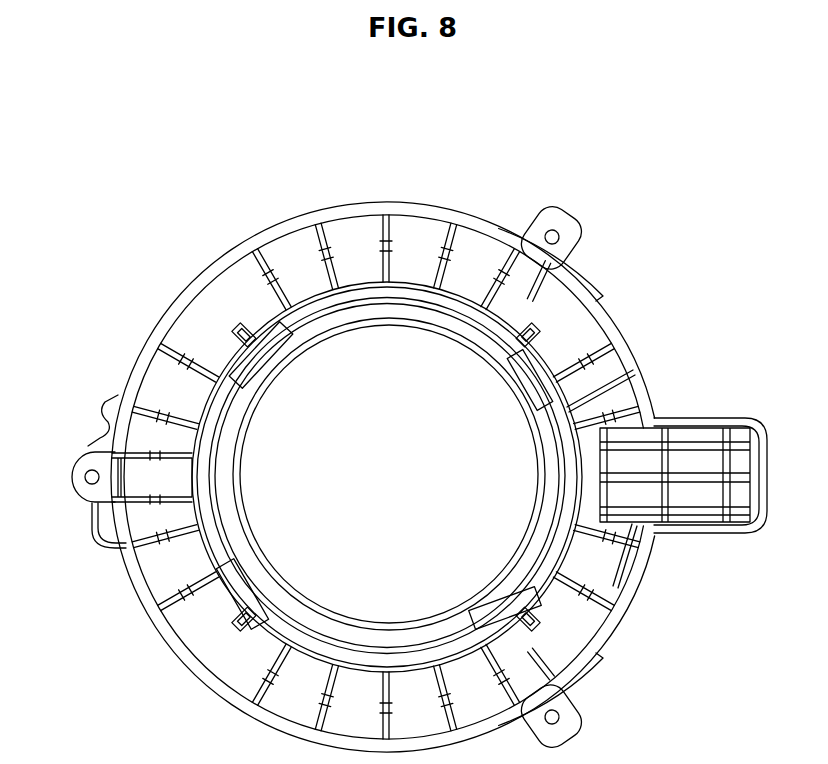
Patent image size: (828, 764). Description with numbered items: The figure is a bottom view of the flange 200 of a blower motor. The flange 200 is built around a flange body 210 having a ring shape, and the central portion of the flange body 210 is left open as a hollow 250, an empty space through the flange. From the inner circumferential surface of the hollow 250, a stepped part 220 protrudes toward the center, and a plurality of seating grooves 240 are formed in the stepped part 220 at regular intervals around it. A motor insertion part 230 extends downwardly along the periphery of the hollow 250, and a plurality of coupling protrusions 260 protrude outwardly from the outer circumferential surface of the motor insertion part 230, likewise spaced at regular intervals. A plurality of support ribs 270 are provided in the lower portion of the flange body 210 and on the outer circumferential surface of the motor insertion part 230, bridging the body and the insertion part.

The flange 200 is at (172, 258).
The flange body 210 is at (416, 236).
The stepped part 220 is at (377, 312).
The motor insertion part 230 is at (203, 400).
The seating grooves 240 is at (277, 357).
The hollow 250 is at (468, 479).
The coupling protrusions 260 is at (247, 326).
The support ribs 270 is at (183, 578).